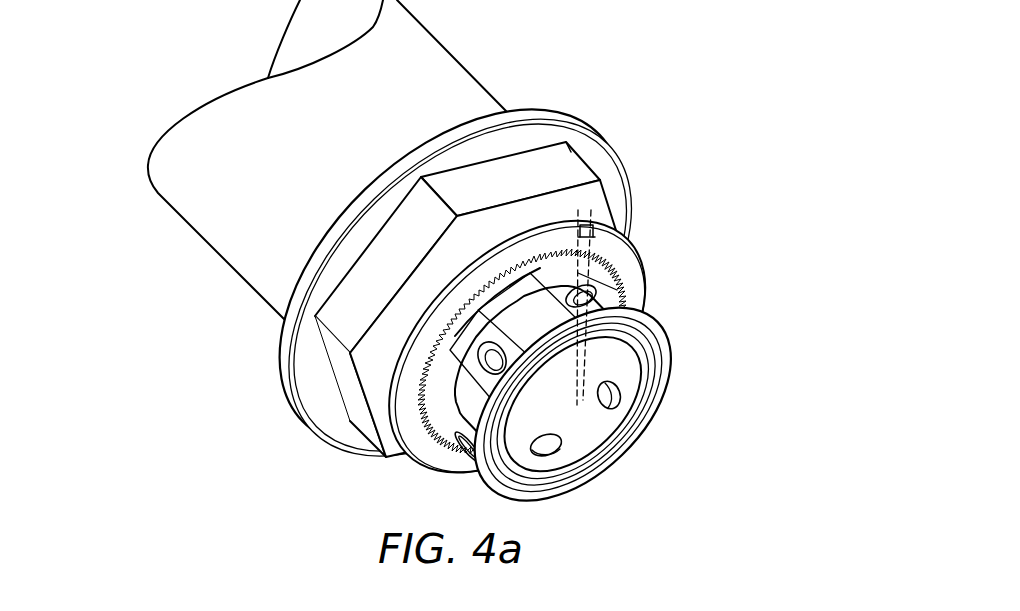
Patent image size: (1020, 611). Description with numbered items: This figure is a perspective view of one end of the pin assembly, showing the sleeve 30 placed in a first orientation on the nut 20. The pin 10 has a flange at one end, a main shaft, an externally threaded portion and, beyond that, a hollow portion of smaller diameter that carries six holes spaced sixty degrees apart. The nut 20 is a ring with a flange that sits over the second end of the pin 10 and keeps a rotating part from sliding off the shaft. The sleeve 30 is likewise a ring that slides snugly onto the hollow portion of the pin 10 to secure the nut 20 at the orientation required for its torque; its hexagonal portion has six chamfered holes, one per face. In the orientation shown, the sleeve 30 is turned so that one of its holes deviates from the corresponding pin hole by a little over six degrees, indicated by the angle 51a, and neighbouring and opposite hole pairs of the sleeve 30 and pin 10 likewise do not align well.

The pin 10 is at (205, 255).
The nut 20 is at (568, 109).
The sleeve 30 is at (543, 355).
The angle 51a is at (584, 229).